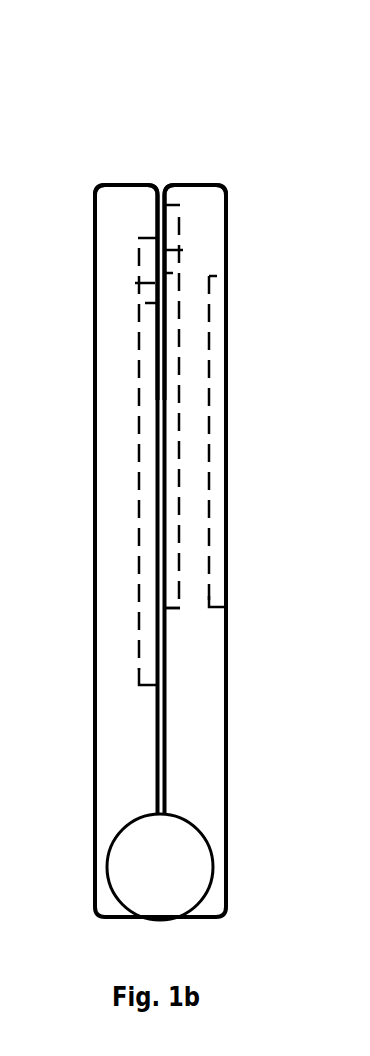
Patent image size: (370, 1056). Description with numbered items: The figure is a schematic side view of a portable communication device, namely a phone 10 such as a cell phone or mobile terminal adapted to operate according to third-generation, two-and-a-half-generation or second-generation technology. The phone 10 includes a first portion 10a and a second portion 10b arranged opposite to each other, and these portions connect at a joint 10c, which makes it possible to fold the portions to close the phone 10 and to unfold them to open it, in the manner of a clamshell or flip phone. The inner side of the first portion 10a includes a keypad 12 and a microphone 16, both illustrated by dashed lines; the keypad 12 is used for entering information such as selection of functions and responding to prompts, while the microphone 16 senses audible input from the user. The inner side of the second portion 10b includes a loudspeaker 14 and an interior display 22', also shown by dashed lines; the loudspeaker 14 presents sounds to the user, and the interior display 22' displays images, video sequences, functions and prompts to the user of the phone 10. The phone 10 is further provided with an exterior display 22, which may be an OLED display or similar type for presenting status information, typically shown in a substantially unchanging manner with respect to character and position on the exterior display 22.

The phone 10 is at (87, 118).
The first portion 10a is at (122, 198).
The second portion 10b is at (188, 198).
The joint 10c is at (188, 852).
The keypad 12 is at (143, 481).
The loudspeaker 14 is at (175, 216).
The microphone 16 is at (135, 246).
The exterior display 22 is at (263, 441).
The interior display 22' is at (223, 623).